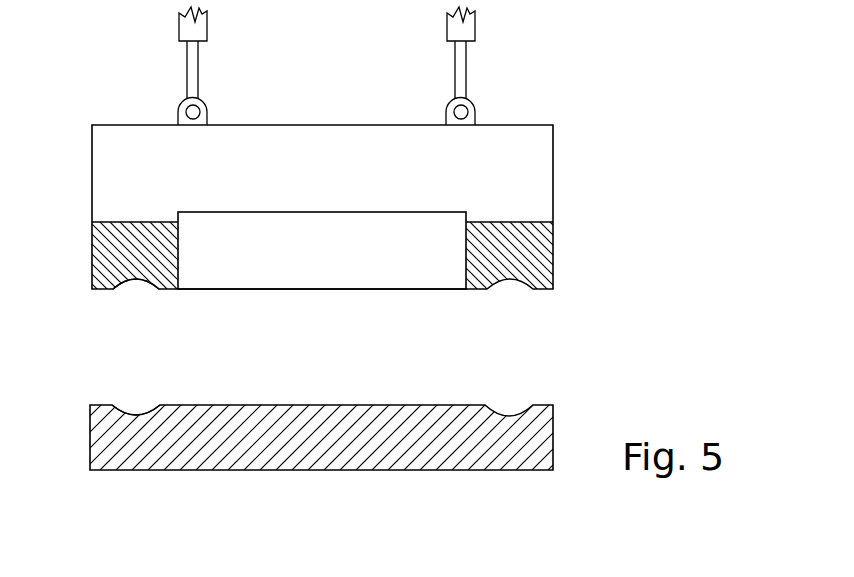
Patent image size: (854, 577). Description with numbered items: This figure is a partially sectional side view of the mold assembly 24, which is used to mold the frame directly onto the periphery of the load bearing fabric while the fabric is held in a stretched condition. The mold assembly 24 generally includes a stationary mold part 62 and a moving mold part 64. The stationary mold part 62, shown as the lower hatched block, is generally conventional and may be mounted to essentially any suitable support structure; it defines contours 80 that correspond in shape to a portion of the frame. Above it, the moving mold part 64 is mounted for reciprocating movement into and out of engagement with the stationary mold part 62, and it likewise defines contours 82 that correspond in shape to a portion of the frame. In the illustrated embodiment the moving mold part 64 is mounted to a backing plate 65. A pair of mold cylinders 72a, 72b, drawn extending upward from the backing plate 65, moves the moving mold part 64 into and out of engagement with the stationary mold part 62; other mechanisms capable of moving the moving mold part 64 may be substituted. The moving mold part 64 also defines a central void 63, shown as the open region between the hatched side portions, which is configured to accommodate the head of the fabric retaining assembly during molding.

The mold assembly 24 is at (590, 117).
The stationary mold part 62 is at (240, 405).
The central void 63 is at (396, 283).
The moving mold part 64 is at (92, 258).
The backing plate 65 is at (553, 192).
The mold cylinder 72a is at (200, 30).
The mold cylinder 72b is at (451, 32).
The contours 80 is at (134, 413).
The contours 82 is at (128, 281).